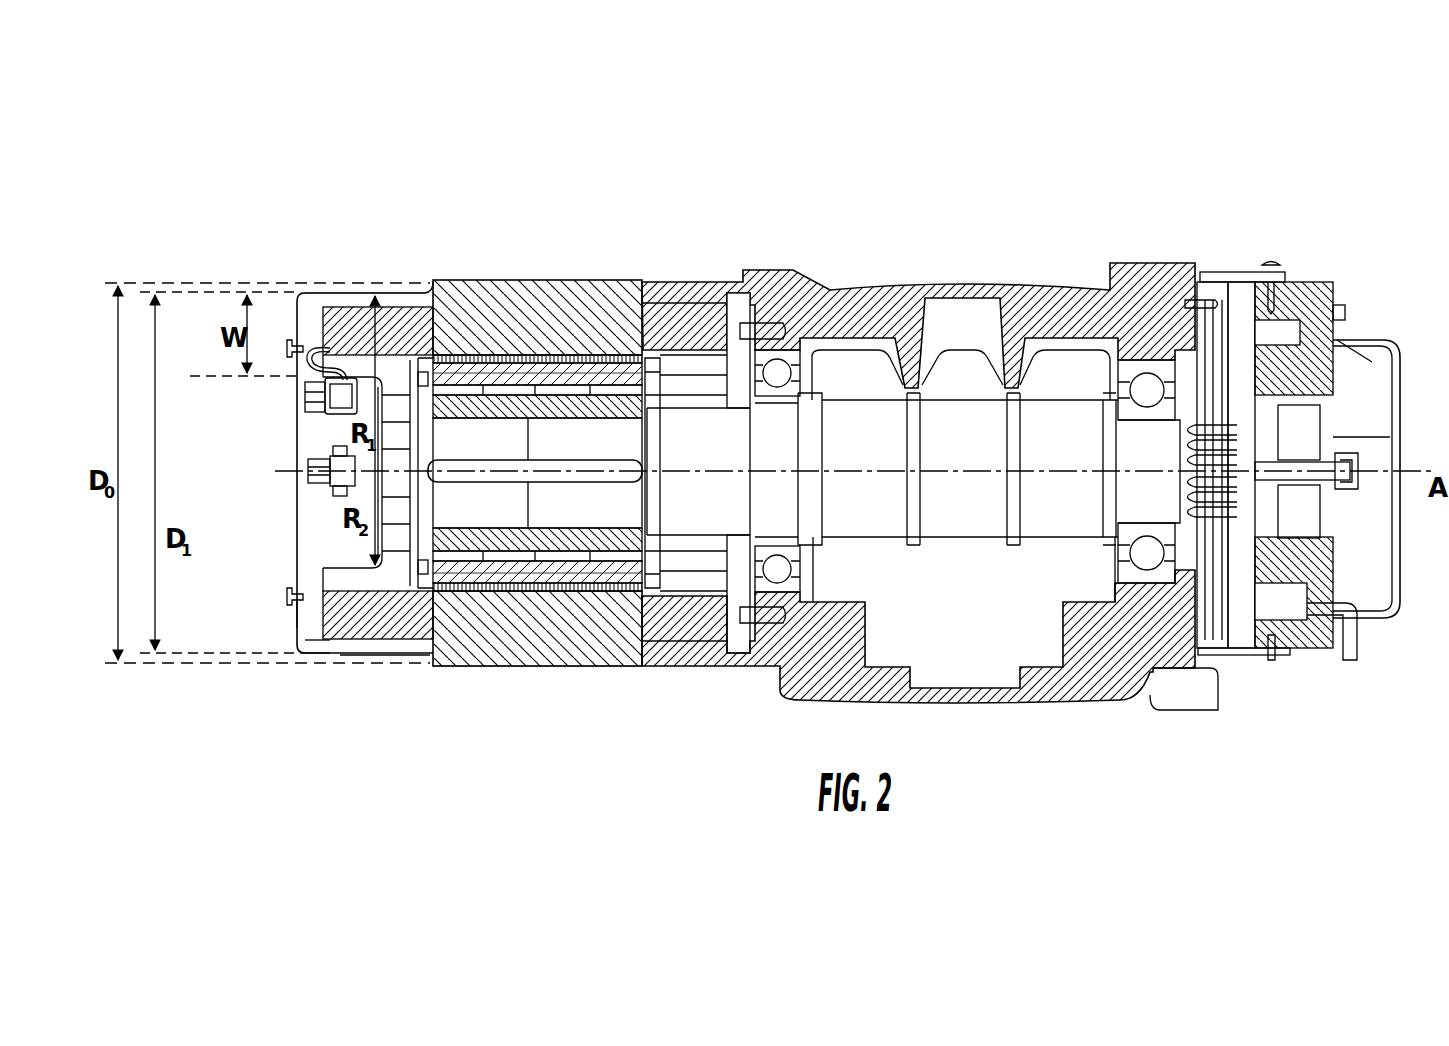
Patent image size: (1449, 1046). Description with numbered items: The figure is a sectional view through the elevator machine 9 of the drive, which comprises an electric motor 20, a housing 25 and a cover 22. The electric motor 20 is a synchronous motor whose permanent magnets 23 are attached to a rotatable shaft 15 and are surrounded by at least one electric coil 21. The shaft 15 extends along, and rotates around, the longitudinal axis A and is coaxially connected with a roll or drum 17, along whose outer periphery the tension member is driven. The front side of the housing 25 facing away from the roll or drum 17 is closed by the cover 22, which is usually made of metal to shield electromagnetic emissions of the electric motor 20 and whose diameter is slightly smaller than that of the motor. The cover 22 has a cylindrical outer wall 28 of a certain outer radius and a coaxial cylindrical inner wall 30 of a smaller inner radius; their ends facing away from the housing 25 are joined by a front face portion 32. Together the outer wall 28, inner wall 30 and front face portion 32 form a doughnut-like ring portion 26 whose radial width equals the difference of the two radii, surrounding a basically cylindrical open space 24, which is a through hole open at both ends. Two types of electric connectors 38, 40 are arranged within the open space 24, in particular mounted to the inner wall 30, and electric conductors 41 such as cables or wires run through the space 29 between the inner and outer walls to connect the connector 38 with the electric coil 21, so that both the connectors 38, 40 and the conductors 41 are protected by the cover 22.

The elevator machine 9 is at (1289, 167).
The shaft 15 is at (603, 452).
The roll or drum 17 is at (958, 575).
The electric motor 20 is at (557, 700).
The electric coil 21 is at (543, 300).
The cover 22 is at (384, 223).
The permanent magnets 23 is at (495, 405).
The open space 24 is at (272, 572).
The housing 25 is at (705, 213).
The ring portion 26 is at (296, 672).
The outer wall 28 is at (378, 655).
The space 29 is at (314, 647).
The inner wall 30 is at (320, 565).
The front face portion 32 is at (296, 628).
The electric connector 38 is at (298, 423).
The electric connector 40 is at (313, 492).
The electric conductors 41 is at (313, 290).